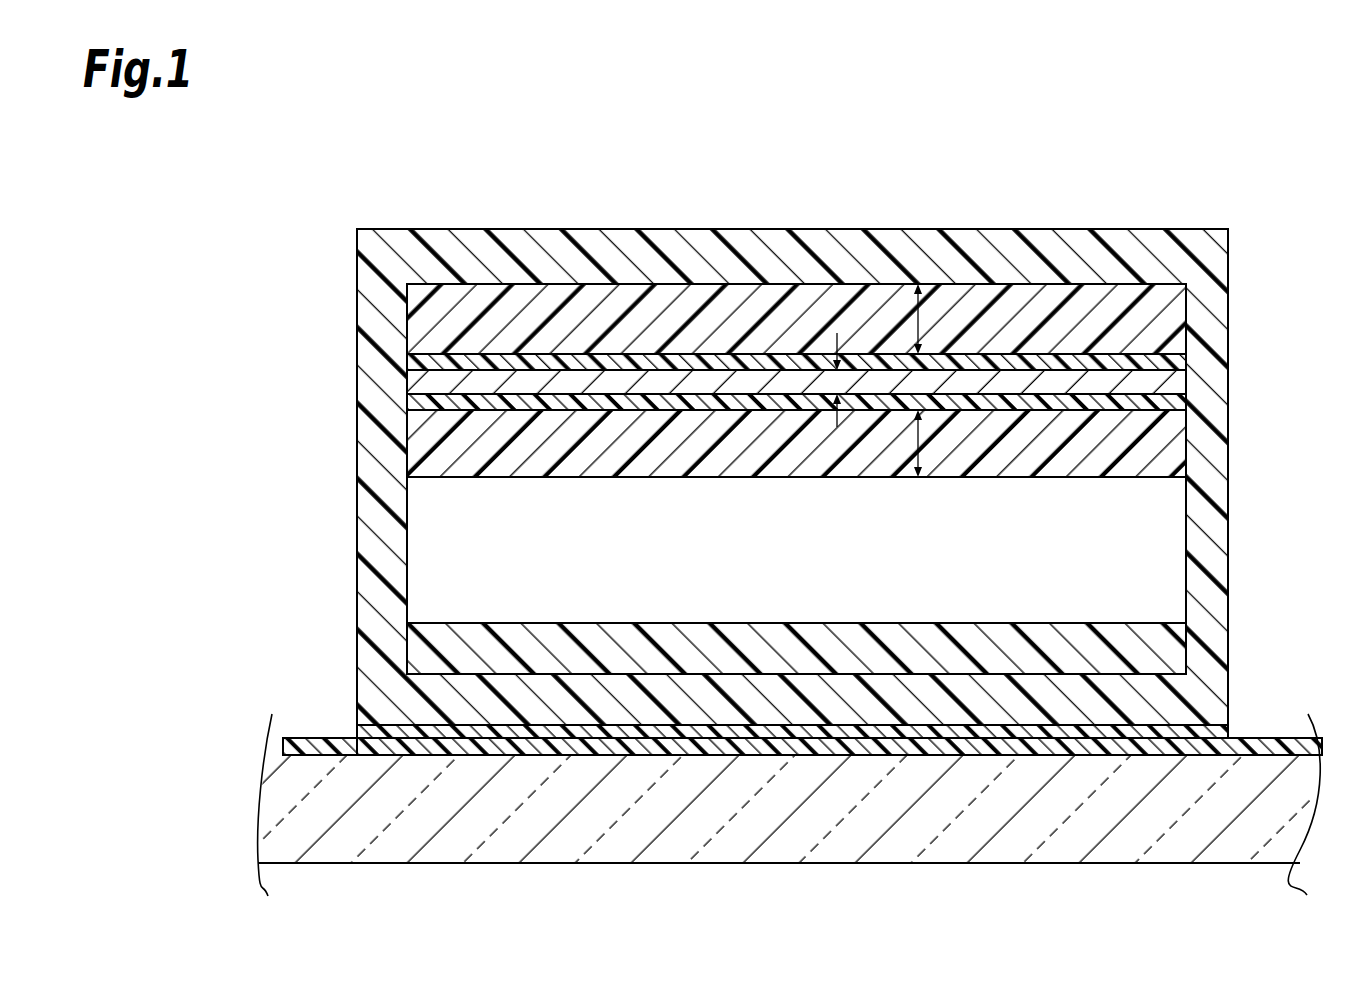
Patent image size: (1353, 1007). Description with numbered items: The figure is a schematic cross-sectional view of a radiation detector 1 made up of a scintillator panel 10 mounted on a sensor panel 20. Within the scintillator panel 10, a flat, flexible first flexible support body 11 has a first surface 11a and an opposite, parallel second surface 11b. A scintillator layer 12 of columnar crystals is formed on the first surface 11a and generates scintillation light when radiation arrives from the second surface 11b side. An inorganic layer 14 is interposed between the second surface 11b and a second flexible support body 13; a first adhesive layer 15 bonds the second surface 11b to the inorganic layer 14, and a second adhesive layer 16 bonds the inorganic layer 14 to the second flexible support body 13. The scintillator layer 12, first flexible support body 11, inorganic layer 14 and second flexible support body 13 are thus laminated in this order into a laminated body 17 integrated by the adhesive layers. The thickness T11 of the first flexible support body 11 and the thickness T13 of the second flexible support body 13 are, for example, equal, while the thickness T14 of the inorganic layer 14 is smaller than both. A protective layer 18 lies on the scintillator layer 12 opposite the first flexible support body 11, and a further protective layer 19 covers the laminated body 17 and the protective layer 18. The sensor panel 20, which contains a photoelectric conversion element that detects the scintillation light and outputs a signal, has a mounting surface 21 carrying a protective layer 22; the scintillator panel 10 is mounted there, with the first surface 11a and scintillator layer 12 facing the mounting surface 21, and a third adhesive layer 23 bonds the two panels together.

The radiation detector 1 is at (790, 512).
The scintillator panel 10 is at (1065, 228).
The first flexible support body 11 is at (1177, 430).
The first surface 11a is at (1098, 478).
The second surface 11b is at (1113, 402).
The scintillator layer 12 is at (1165, 557).
The second flexible support body 13 is at (1173, 303).
The inorganic layer 14 is at (1173, 380).
The first adhesive layer 15 is at (1173, 400).
The second adhesive layer 16 is at (1173, 362).
The laminated body 17 is at (1152, 268).
The protective layer 18 is at (438, 650).
The protective layer 19 is at (470, 258).
The sensor panel 20 is at (1262, 775).
The mounting surface 21 is at (338, 746).
The protective layer 22 is at (1203, 745).
The third adhesive layer 23 is at (798, 733).
The thickness of the first flexible support body T11 is at (935, 452).
The thickness of the second flexible support body T13 is at (920, 317).
The thickness of the inorganic layer T14 is at (842, 380).